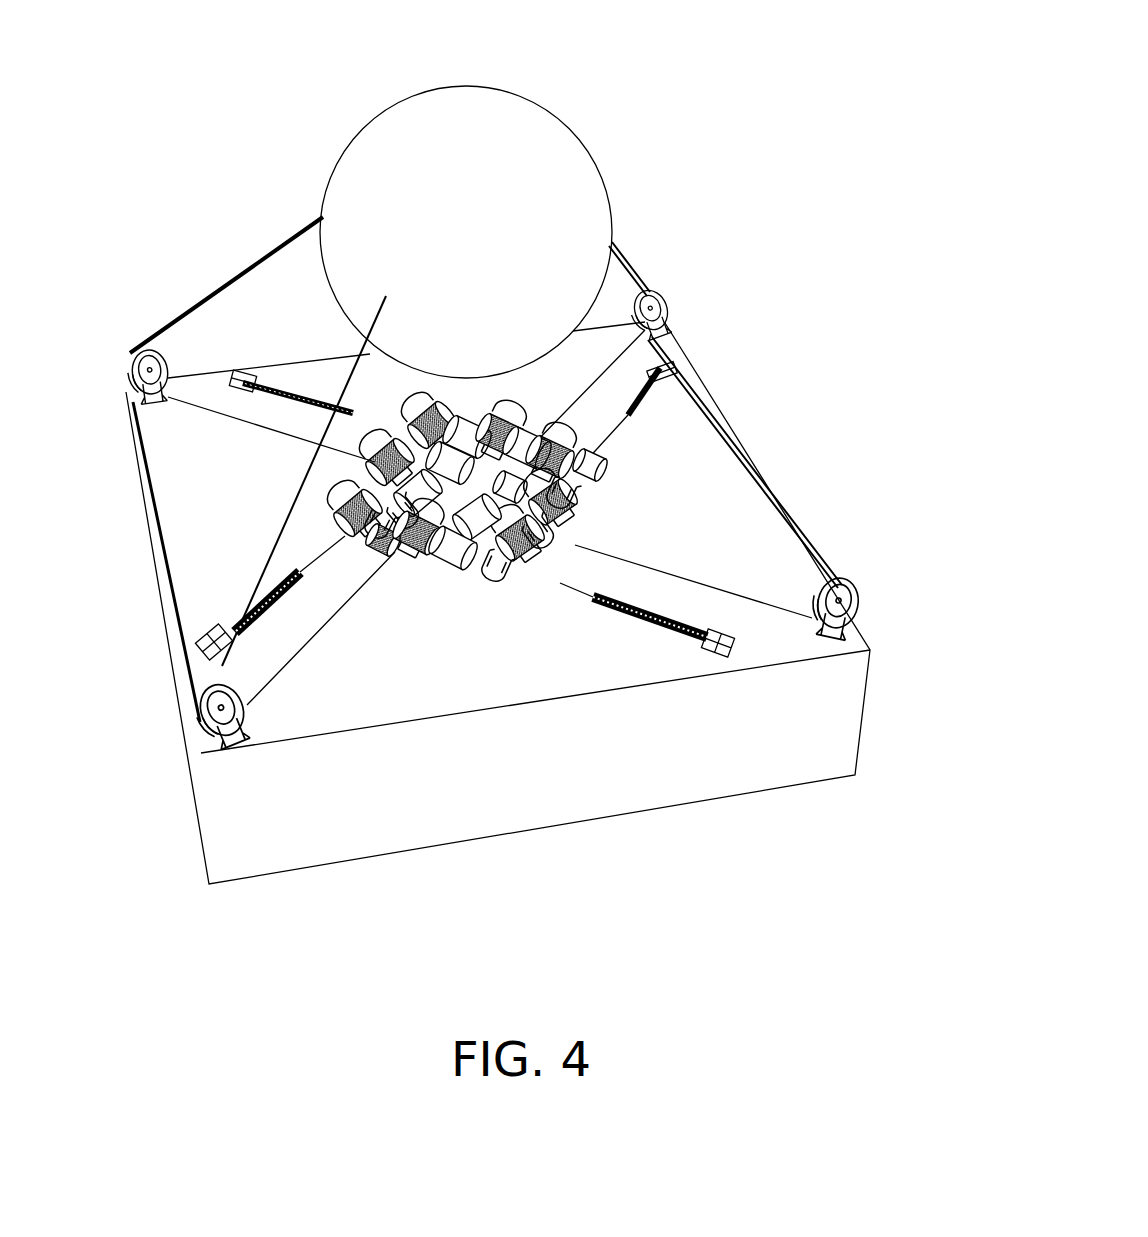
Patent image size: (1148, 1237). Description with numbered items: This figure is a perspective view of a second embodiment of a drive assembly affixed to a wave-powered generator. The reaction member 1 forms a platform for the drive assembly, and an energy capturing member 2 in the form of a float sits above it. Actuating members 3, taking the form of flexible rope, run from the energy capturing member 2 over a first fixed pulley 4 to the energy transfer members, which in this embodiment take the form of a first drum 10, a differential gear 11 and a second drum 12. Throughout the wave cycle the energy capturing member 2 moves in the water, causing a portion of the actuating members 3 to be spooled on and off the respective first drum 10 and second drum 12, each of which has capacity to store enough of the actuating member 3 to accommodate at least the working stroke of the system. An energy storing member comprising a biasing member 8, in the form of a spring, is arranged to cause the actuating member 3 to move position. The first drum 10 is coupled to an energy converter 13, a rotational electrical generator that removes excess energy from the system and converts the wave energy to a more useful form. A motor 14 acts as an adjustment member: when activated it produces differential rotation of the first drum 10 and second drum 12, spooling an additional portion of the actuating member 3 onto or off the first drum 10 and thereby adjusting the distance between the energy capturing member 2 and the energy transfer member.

The reaction member 1 is at (727, 712).
The energy capturing member 2 is at (445, 147).
The actuating members 3 is at (243, 277).
The first fixed pulley 4 is at (850, 580).
The biasing member 8 is at (632, 603).
The first drum 10 is at (412, 557).
The differential gear 11 is at (379, 545).
The second drum 12 is at (340, 511).
The energy converter 13 is at (463, 570).
The motor 14 is at (592, 472).